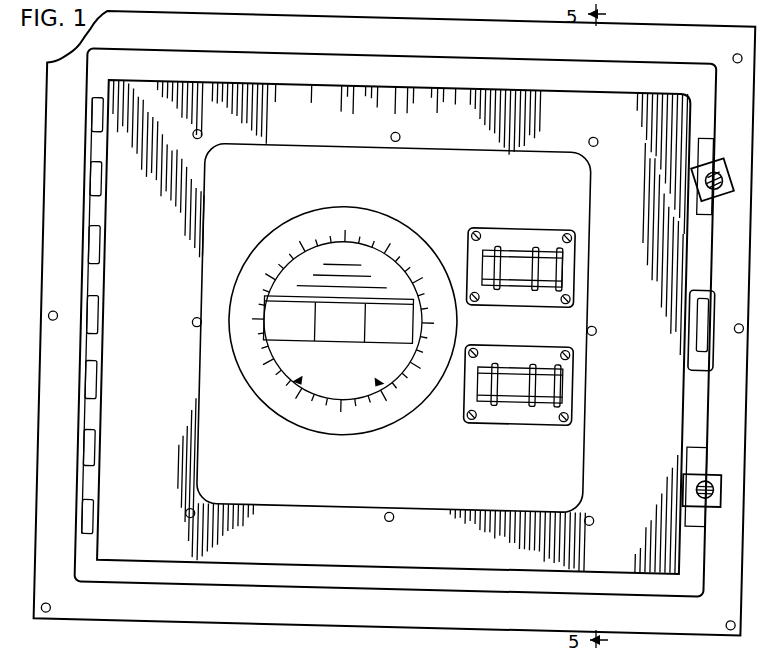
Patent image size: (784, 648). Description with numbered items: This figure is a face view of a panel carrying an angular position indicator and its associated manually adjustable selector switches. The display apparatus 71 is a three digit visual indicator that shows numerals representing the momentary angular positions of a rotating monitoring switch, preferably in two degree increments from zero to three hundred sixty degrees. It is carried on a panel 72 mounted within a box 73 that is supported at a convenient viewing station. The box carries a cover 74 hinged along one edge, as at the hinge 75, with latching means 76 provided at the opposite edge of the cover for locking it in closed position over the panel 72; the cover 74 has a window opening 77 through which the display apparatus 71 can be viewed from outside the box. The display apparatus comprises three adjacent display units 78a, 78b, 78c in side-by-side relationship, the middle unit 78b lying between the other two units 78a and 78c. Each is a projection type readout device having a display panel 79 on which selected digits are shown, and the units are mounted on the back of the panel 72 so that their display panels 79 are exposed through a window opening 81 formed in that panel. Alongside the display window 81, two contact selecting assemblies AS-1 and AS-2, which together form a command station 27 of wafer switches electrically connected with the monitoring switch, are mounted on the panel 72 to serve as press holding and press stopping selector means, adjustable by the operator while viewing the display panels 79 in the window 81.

The command station 27 is at (554, 327).
The contact selecting assembly AS-1 is at (573, 270).
The contact selecting assembly AS-2 is at (575, 388).
The three digit display apparatus 71 is at (331, 320).
The panel 72 is at (248, 499).
The box 73 is at (137, 589).
The cover 74 is at (158, 563).
The hinge 75 is at (93, 463).
The latching means 76 is at (698, 322).
The window opening 77 is at (200, 227).
The display unit 78a is at (290, 321).
The display unit 78b is at (340, 322).
The display unit 78c is at (372, 333).
The display panel 79 is at (337, 342).
The window opening 81 is at (262, 329).